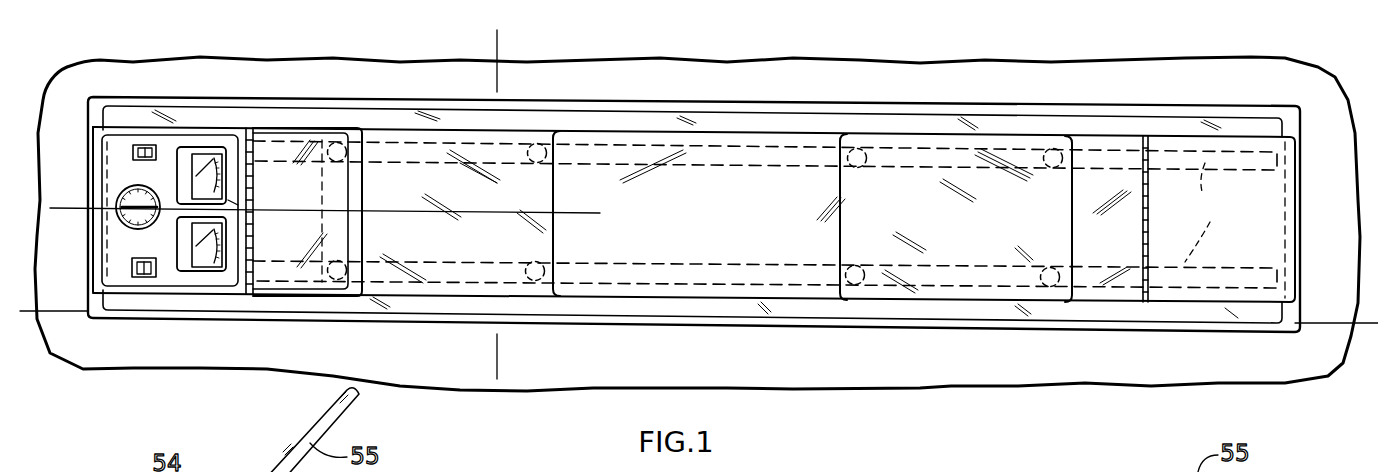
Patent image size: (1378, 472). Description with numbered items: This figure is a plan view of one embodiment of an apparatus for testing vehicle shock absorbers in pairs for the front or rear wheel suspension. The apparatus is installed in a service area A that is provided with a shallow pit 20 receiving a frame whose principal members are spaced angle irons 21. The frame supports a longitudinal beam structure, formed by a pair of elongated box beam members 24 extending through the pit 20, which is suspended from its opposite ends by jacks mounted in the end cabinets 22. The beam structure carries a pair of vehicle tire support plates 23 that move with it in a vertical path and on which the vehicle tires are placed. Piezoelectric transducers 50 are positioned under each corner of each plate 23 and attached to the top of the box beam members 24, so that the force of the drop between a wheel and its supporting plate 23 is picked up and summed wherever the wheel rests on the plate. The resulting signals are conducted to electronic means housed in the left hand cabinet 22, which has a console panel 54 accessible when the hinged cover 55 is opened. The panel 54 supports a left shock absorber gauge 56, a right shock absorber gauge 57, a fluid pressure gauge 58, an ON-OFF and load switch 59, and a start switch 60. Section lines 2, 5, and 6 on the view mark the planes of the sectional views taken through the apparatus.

The shallow pit 20 is at (662, 106).
The spaced angle irons 21 is at (763, 120).
The end cabinets 22 is at (180, 127).
The vehicle tire support plates 23 is at (456, 251).
The elongated box beam members 24 is at (1235, 220).
The piezoelectric transducers 50 is at (343, 262).
The console panel 54 is at (232, 205).
The hinged cover 55 is at (295, 127).
The left shock absorber gauge 56 is at (207, 147).
The right shock absorber gauge 57 is at (226, 247).
The fluid pressure gauge 58 is at (120, 200).
The ON-OFF and load switch 59 is at (142, 143).
The start switch 60 is at (147, 279).
The service area A is at (1018, 369).
The section line 2- 2 is at (60, 316).
The section line 5- 5 is at (61, 213).
The section line 6- 6 is at (500, 42).